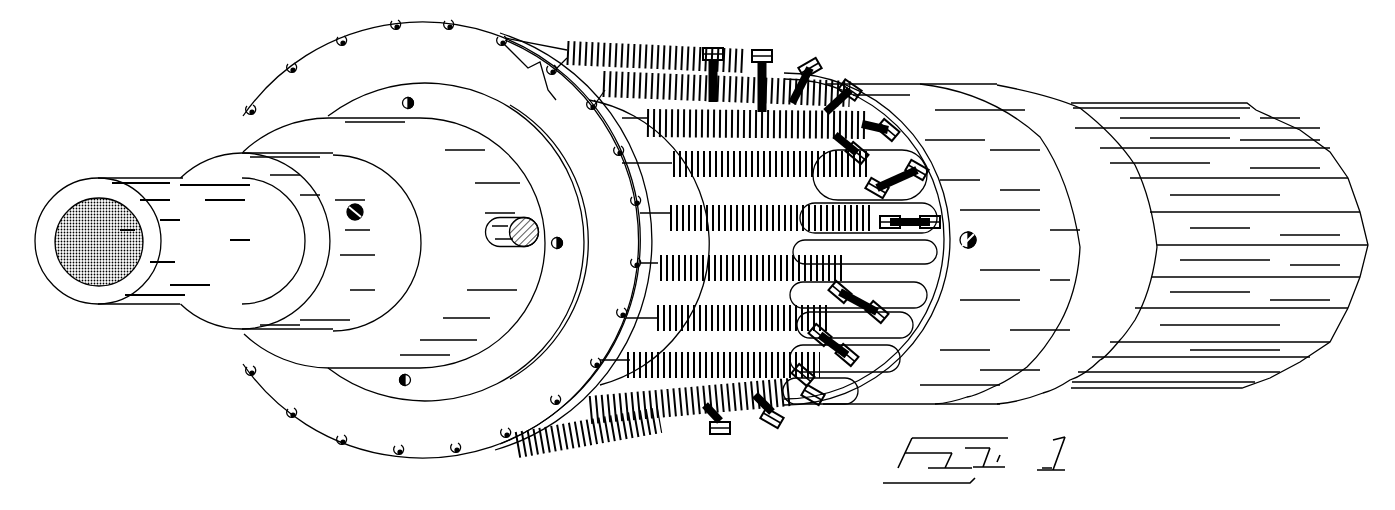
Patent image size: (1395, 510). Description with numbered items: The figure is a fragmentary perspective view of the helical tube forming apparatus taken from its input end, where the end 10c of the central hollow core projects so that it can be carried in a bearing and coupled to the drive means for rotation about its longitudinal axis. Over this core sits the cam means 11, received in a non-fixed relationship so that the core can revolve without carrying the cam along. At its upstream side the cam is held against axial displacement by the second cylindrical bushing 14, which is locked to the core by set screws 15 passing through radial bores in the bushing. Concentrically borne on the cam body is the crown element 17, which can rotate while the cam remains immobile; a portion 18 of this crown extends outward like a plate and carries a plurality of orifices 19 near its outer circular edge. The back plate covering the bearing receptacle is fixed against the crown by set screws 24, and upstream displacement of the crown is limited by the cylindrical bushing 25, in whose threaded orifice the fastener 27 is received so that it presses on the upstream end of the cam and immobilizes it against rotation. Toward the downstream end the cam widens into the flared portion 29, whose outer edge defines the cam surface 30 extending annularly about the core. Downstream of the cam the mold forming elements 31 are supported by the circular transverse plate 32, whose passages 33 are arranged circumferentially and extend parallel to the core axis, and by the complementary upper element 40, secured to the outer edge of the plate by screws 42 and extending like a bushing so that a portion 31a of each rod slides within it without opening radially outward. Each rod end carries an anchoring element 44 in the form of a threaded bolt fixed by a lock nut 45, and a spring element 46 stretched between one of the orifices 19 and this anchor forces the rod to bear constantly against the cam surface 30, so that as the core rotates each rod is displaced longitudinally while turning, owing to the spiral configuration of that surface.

The end of the core 10c is at (149, 178).
The second cylindrical bushing 14 is at (312, 239).
The cylindrical bushing 25 is at (463, 175).
The fastener 27 is at (515, 248).
The set screws 15 is at (364, 214).
The crown element 17 is at (430, 82).
The set screws 24 is at (567, 249).
The plate portion of the crown 18 is at (270, 90).
The cam means 11 is at (658, 238).
The orifices 19 is at (554, 83).
The spring element 46 is at (703, 184).
The flared portion 29 is at (732, 197).
The cam surface 30 is at (782, 298).
The mold forming elements 31 is at (920, 188).
The circular transverse plate 32 is at (945, 272).
The passages 33 is at (936, 301).
The complementary upper element 40 is at (967, 142).
The screws 42 is at (981, 240).
The portion of the mold forming elements 31a is at (1168, 242).
The anchoring element 44 is at (819, 400).
The lock nut 45 is at (835, 390).